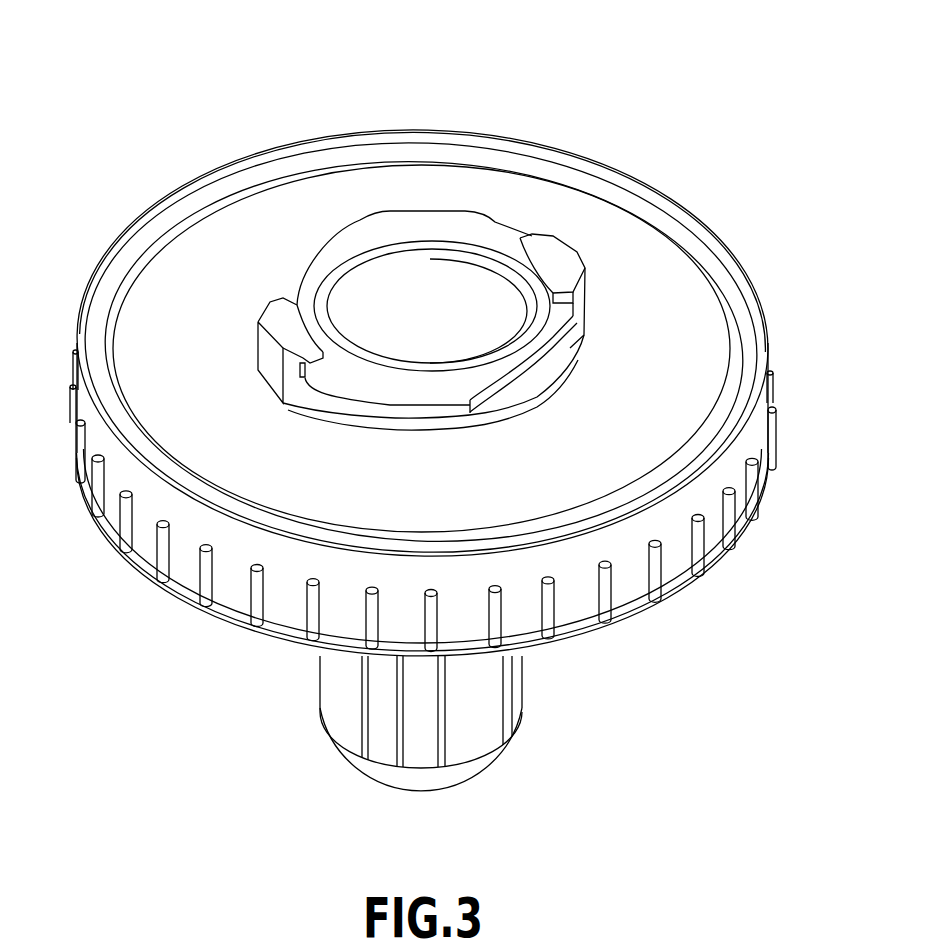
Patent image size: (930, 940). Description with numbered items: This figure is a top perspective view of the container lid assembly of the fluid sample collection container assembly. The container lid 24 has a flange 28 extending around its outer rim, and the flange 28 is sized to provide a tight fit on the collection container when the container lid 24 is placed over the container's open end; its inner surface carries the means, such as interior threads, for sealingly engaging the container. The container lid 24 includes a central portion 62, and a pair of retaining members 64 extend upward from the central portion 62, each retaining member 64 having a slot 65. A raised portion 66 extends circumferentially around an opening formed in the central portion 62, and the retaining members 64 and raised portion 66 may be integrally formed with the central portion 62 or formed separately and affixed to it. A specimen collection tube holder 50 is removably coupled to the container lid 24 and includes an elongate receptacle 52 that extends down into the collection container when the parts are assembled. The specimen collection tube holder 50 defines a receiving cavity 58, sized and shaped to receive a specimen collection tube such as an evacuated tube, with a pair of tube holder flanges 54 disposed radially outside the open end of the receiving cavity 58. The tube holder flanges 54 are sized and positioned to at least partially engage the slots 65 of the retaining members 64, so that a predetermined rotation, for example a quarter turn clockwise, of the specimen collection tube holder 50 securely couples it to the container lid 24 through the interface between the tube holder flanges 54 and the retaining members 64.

The container lid 24 is at (742, 91).
The flange 28 is at (183, 557).
The specimen collection tube holder 50 is at (322, 698).
The elongate receptacle 52 is at (490, 700).
The tube holder flanges 54 is at (408, 228).
The receiving cavity 58 is at (447, 325).
The central portion 62 is at (268, 479).
The retaining members 64 is at (567, 260).
The slot 65 is at (575, 306).
The raised portion 66 is at (572, 342).